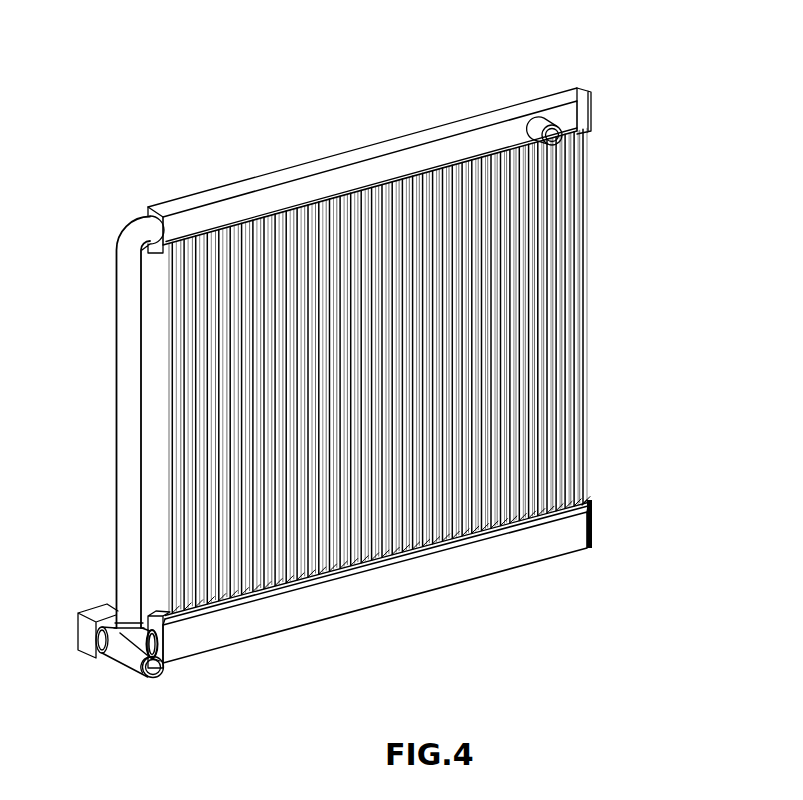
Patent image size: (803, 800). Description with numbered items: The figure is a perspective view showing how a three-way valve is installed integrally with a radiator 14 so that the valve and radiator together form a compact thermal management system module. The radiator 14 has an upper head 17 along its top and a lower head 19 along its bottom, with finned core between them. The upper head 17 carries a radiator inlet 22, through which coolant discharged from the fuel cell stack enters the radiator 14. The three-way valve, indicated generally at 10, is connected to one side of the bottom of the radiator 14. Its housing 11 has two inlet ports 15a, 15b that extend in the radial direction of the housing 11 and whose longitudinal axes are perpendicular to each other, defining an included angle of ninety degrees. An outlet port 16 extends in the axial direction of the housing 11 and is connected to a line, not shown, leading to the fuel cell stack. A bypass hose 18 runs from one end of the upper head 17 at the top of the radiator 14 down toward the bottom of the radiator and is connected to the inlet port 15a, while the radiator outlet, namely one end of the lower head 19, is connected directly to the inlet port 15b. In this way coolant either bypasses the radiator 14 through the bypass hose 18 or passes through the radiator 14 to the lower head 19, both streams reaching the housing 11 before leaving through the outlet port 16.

The inlet fitting block 10 is at (100, 615).
The housing 11 is at (120, 662).
The radiator 14 is at (583, 293).
The inlet port 15a is at (99, 656).
The inlet port 15b is at (163, 645).
The outlet port 16 is at (153, 679).
The upper head 17 is at (360, 177).
The bypass hose 18 is at (126, 470).
The lower head 19 is at (263, 623).
The radiator inlet 22 is at (550, 123).